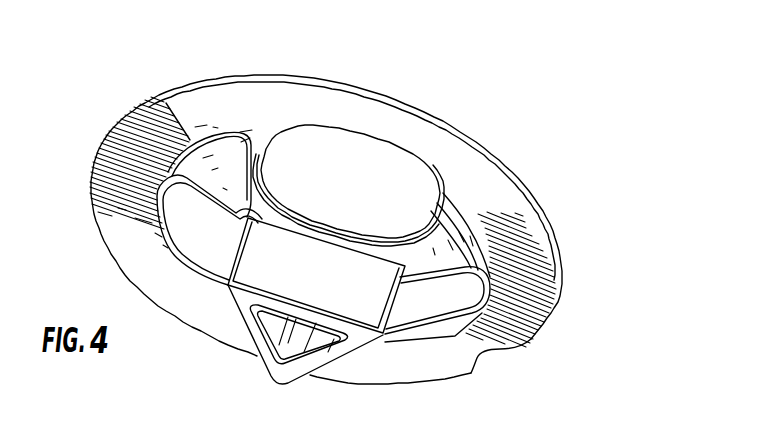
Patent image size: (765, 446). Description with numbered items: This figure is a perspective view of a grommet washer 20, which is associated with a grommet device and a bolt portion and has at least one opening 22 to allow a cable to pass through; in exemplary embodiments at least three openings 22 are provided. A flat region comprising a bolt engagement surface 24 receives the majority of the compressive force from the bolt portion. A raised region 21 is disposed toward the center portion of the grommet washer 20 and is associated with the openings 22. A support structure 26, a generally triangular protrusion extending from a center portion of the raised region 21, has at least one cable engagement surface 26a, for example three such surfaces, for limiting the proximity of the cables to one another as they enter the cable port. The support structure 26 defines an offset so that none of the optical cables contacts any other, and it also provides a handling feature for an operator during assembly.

The grommet washer 20 is at (440, 107).
The raised region 21 is at (455, 237).
The opening 22 is at (314, 152).
The bolt engagement surface 24 is at (512, 239).
The support structure 26 is at (344, 348).
The cable engagement surface 26a is at (288, 273).